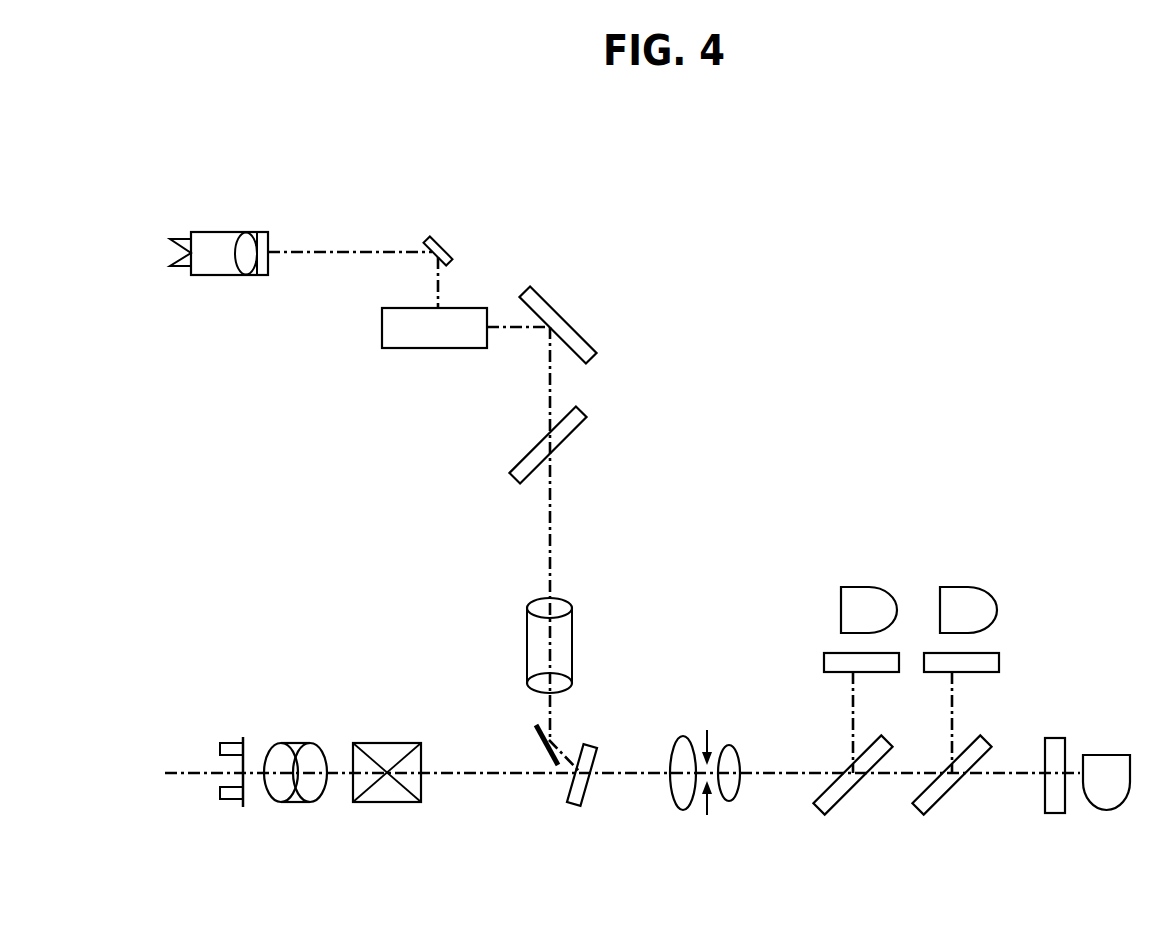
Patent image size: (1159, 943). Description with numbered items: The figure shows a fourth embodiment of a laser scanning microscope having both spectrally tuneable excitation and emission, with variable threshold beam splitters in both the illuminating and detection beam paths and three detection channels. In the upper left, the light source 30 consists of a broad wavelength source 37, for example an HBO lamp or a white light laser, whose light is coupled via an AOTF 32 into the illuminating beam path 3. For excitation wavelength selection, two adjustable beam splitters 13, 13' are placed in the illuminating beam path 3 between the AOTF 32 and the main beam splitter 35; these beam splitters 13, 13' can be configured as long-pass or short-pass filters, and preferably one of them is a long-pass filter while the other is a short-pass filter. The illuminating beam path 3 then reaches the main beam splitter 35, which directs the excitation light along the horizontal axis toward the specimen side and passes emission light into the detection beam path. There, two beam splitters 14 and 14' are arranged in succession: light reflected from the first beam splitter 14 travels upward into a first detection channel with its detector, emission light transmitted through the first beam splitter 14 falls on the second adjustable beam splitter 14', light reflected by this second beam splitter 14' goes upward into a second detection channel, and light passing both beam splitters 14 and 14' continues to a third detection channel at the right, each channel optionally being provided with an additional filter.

The light source 30 is at (235, 355).
The broad wavelength source 37 is at (214, 243).
The AOTF 32 is at (468, 322).
The adjustable beam splitter 13 is at (580, 311).
The adjustable beam splitter 13' is at (581, 446).
The illuminating beam path 3 is at (548, 568).
The main beam splitter 35 is at (593, 750).
The beam splitter 14 is at (861, 801).
The beam splitter 14' is at (963, 801).